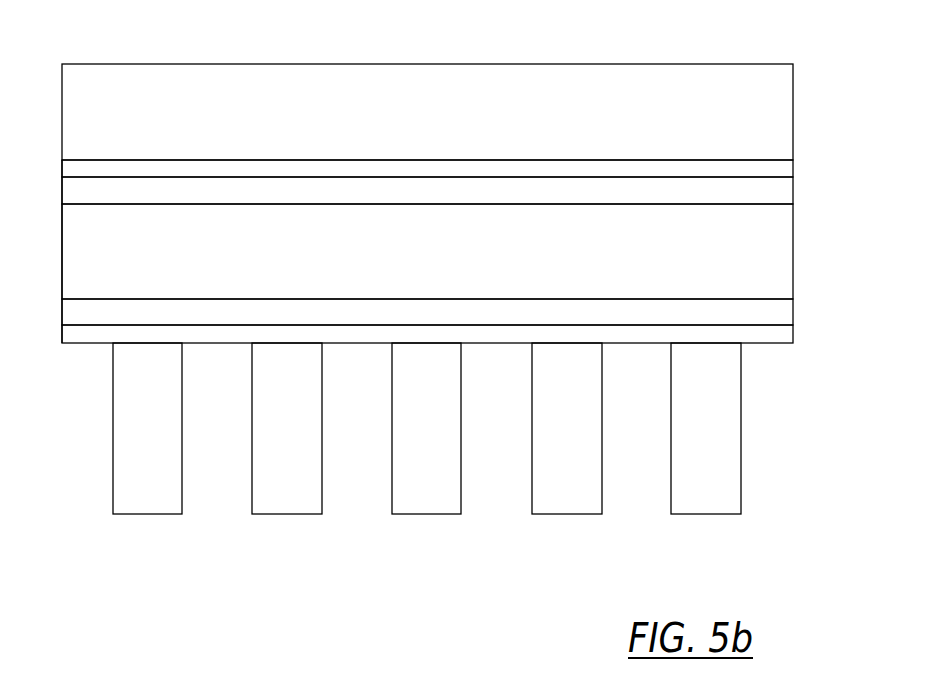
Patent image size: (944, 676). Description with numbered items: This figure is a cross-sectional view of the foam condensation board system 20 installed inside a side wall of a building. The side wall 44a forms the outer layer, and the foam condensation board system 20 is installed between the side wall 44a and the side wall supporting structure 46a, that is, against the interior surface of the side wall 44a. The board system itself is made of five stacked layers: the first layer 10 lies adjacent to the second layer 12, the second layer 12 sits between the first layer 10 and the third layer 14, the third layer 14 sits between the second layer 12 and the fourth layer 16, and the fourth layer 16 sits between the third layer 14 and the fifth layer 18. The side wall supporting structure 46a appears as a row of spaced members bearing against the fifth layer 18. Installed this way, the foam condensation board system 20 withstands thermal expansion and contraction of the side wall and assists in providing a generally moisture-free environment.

The side wall 44a is at (793, 117).
The first layer 10 is at (793, 170).
The second layer 12 is at (793, 199).
The third layer 14 is at (793, 253).
The fourth layer 16 is at (793, 310).
The fifth layer 18 is at (793, 339).
The foam condensation board system 20 is at (58, 160).
The side wall supporting structure 46a is at (164, 437).